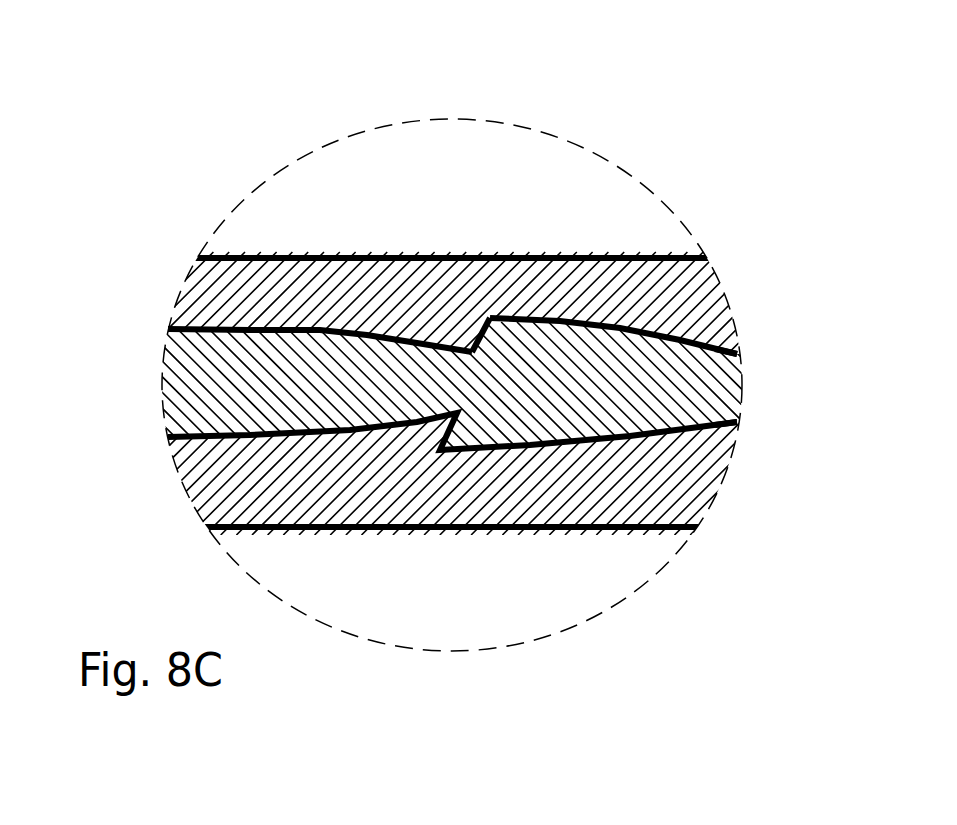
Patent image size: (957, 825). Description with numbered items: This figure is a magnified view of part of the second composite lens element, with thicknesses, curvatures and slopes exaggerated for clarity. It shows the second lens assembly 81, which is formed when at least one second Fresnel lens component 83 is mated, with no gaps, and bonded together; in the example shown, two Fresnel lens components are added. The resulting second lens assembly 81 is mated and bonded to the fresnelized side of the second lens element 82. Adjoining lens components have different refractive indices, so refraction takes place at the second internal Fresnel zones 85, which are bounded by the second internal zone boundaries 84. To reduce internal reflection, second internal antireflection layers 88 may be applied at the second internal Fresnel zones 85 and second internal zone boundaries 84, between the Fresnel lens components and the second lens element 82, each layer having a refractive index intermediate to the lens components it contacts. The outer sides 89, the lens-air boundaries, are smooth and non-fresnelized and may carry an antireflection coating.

The second lens assembly 81 is at (115, 446).
The second lens element 82 is at (302, 295).
The second Fresnel lens component 83 is at (613, 378).
The second internal zone boundaries 84 is at (487, 317).
The second internal Fresnel zones 85 is at (388, 338).
The second internal antireflection layers 88 is at (562, 318).
The outer sides 89 is at (665, 522).